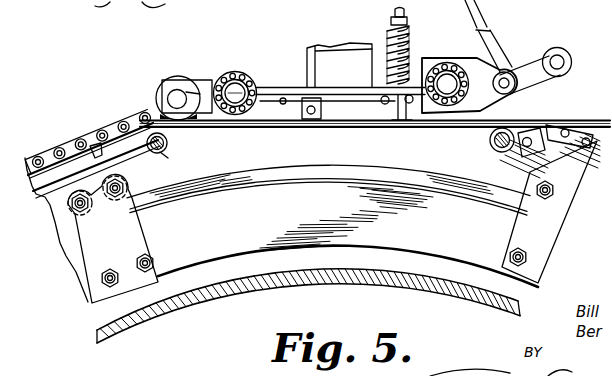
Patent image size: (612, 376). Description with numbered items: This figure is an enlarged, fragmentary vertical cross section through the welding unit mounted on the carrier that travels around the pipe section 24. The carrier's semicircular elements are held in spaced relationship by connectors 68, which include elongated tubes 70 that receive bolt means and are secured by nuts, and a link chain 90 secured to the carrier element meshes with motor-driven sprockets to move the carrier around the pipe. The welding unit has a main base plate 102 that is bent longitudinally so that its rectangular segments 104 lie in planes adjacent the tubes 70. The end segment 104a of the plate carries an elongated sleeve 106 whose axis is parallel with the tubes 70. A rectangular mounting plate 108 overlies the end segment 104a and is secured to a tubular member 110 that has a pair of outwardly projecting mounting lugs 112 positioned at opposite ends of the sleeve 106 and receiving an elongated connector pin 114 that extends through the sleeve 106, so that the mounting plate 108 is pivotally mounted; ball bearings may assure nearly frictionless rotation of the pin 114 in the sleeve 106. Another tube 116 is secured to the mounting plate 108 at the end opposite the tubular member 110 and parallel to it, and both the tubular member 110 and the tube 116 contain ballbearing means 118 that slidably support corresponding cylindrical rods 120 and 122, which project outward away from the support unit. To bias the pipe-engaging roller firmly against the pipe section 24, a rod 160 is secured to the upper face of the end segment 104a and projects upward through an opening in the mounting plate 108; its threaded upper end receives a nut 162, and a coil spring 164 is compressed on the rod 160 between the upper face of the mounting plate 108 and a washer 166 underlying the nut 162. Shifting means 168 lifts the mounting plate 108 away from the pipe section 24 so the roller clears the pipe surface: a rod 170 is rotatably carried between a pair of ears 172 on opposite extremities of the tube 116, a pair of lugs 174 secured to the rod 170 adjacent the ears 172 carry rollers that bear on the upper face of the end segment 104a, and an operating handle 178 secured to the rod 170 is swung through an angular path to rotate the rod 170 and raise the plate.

The pipe section 24 is at (237, 290).
The connectors 68 is at (166, 152).
The elongated tubes 70 is at (168, 144).
The link chain 90 is at (72, 147).
The main base plate 102 is at (342, 132).
The rectangular segments 104 is at (44, 189).
The end segment 104a is at (433, 128).
The elongated sleeve 106 is at (178, 78).
The mounting plate 108 is at (282, 90).
The tubular member 110 is at (244, 74).
The mounting lugs 112 is at (196, 92).
The connector pin 114 is at (173, 95).
The tube 116 is at (431, 58).
The ballbearing means 118 is at (254, 76).
The cylindrical rod 120 is at (240, 115).
The cylindrical rod 122 is at (448, 80).
The rod 160 is at (401, 129).
The nut 162 is at (392, 14).
The coil spring 164 is at (384, 35).
The washer 166 is at (433, 18).
The shifting means 168 is at (519, 49).
The rod 170 is at (508, 80).
The ears 172 is at (518, 98).
The lugs 174 is at (569, 66).
The operating handle 178 is at (480, 16).